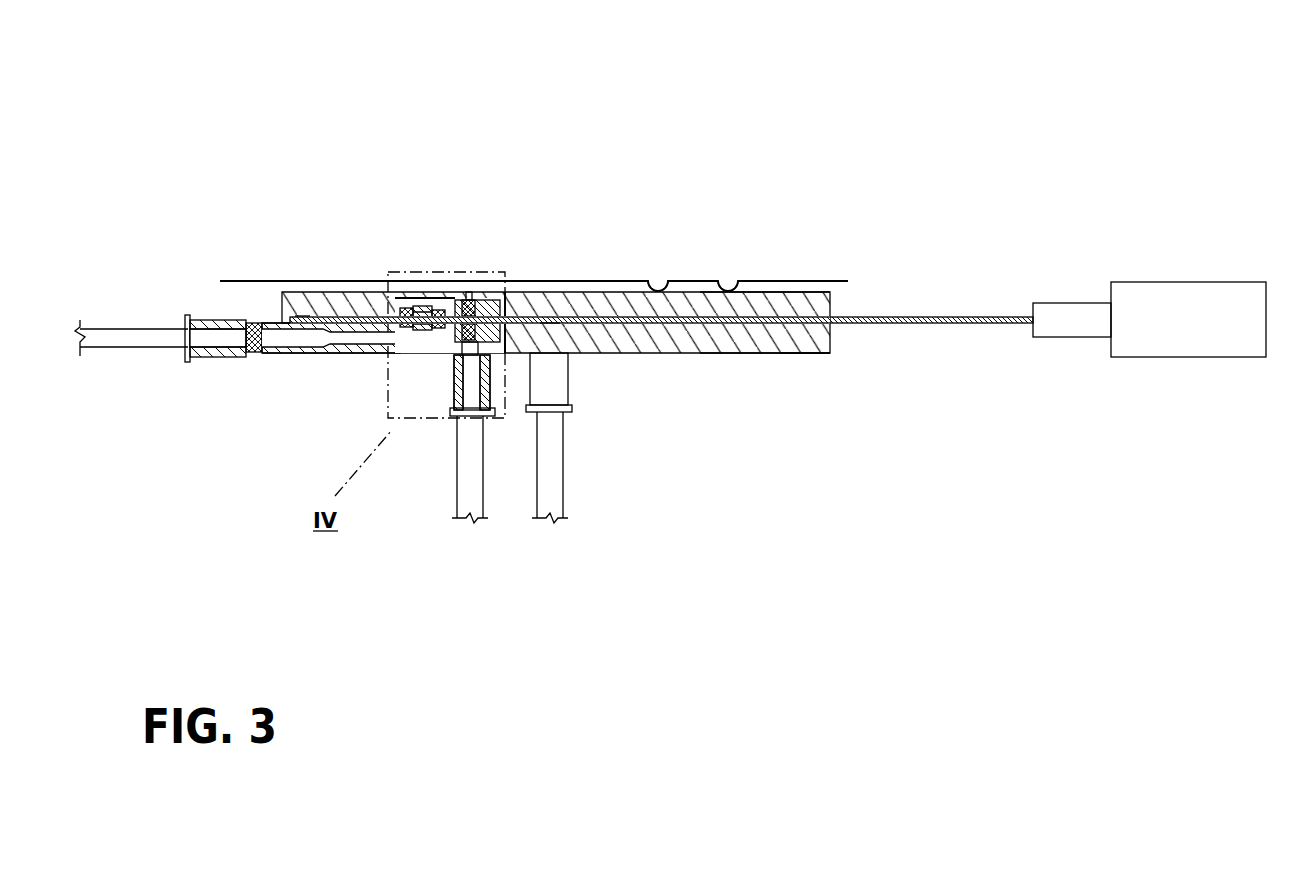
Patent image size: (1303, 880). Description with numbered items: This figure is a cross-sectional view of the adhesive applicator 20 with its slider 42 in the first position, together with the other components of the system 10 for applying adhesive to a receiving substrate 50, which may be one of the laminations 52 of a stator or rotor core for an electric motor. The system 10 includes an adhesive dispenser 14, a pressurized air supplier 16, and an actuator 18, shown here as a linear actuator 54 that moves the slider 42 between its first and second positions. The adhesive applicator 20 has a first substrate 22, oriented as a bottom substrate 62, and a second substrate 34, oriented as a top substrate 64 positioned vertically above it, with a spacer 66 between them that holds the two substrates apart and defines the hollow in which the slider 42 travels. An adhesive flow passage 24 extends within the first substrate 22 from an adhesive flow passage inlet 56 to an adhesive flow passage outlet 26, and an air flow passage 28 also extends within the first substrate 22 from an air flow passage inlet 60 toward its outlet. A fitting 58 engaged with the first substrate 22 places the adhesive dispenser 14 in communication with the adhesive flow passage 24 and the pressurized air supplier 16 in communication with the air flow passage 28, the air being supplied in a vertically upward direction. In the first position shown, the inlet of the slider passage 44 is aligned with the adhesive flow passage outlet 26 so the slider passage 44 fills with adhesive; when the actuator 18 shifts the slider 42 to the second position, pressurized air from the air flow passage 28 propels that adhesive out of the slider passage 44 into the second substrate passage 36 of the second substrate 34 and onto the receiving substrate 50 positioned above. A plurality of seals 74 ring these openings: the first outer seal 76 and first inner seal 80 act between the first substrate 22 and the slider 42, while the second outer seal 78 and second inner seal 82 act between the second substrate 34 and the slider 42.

The system 10 is at (752, 95).
The adhesive dispenser 14 is at (120, 328).
The pressurized air supplier 16 is at (482, 495).
The actuator 18 is at (1172, 282).
The adhesive applicator 20 is at (799, 362).
The first substrate 22 is at (588, 326).
The adhesive flow passage 24 is at (345, 345).
The adhesive flow passage outlet 26 is at (437, 312).
The air flow passage 28 is at (447, 338).
The second substrate 34 is at (823, 300).
The second substrate passage 36 is at (482, 296).
The slider 42 is at (547, 318).
The slider passage 44 is at (420, 302).
The receiving substrate 50 is at (660, 288).
The laminations 52 is at (728, 288).
The linear actuator 54 is at (1125, 297).
The adhesive flow passage inlet 56 is at (250, 345).
The fitting 58 is at (198, 317).
The air flow passage inlet 60 is at (486, 366).
The bottom substrate 62 is at (722, 354).
The top substrate 64 is at (788, 296).
The spacer 66 is at (303, 313).
The seals 74 is at (406, 299).
The first outer seal 76 is at (358, 316).
The second outer seal 78 is at (383, 316).
The first inner seal 80 is at (452, 340).
The second inner seal 82 is at (463, 305).